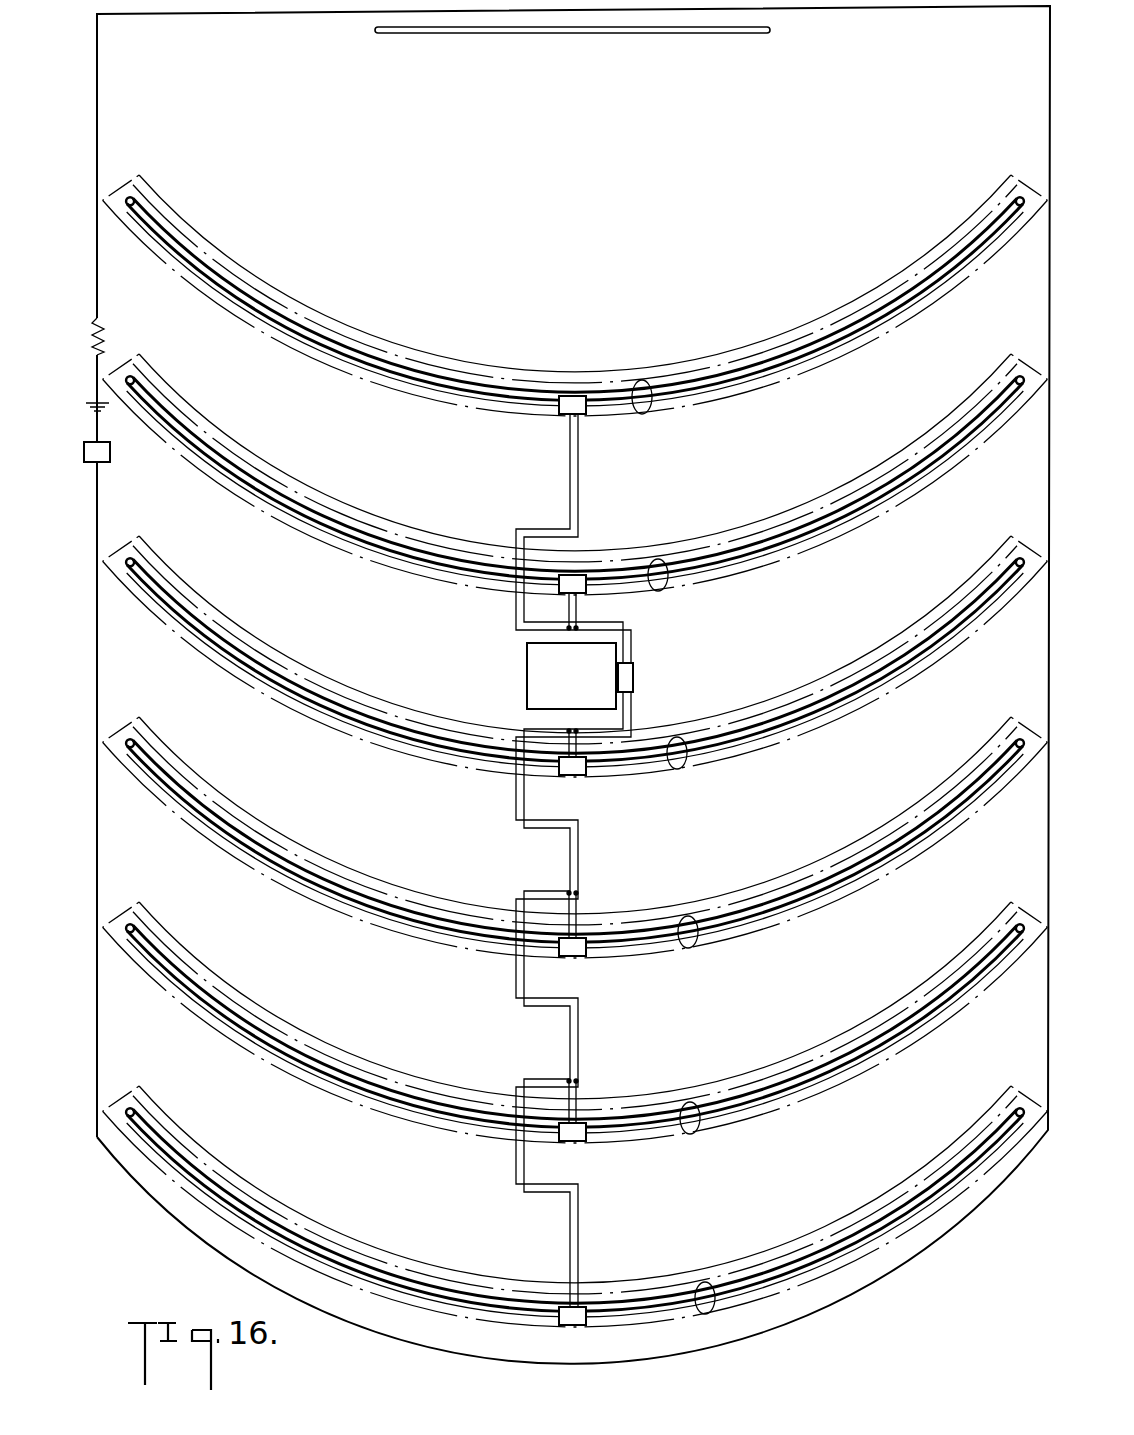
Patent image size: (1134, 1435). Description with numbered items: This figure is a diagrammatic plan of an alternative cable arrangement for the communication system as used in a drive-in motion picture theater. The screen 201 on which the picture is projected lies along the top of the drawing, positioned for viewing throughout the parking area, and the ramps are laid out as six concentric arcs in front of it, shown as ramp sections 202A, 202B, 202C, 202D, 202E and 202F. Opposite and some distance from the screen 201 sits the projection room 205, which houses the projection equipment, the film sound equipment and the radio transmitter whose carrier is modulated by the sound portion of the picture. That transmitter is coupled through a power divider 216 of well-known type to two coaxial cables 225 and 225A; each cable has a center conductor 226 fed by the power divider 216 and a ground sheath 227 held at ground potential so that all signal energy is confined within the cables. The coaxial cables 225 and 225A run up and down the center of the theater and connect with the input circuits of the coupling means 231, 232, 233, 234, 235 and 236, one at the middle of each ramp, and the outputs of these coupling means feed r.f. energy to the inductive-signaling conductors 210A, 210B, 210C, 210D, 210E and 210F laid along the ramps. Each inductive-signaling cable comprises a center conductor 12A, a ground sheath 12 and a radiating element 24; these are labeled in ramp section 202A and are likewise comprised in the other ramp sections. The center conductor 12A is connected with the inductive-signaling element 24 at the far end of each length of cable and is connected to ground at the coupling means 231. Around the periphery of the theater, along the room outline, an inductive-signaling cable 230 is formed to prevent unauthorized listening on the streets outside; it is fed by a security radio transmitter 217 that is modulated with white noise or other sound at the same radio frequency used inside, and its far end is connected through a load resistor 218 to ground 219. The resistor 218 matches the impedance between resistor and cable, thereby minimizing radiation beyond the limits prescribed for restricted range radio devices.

The ground sheath 12 is at (338, 363).
The center conductor 12A is at (310, 343).
The radiating element 24 is at (437, 372).
The screen 201 is at (610, 34).
The ramp section 202A is at (575, 305).
The ramp section 202B is at (575, 474).
The ramp section 202C is at (575, 656).
The ramp section 202D is at (575, 837).
The ramp section 202E is at (575, 1022).
The ramp section 202F is at (575, 1206).
The projection room 205 is at (527, 691).
The inductive-signaling conductor 210A is at (645, 411).
The inductive-signaling conductor 210B is at (658, 590).
The inductive-signaling conductor 210C is at (680, 768).
The inductive-signaling conductor 210D is at (690, 947).
The inductive-signaling conductor 210E is at (690, 1133).
The inductive-signaling conductor 210F is at (705, 1314).
The power divider 216 is at (634, 680).
The security radio transmitter 217 is at (108, 463).
The load resistor 218 is at (102, 338).
The ground 219 is at (103, 412).
The coaxial cable 225 is at (637, 642).
The coaxial cable 225A is at (637, 716).
The center conductor 226 is at (514, 612).
The ground sheath 227 is at (512, 631).
The inductive-signaling cable 230 is at (99, 678).
The coupling means 231 is at (592, 400).
The coupling means 232 is at (588, 578).
The coupling means 233 is at (590, 780).
The coupling means 234 is at (588, 958).
The coupling means 235 is at (588, 1145).
The coupling means 236 is at (585, 1307).